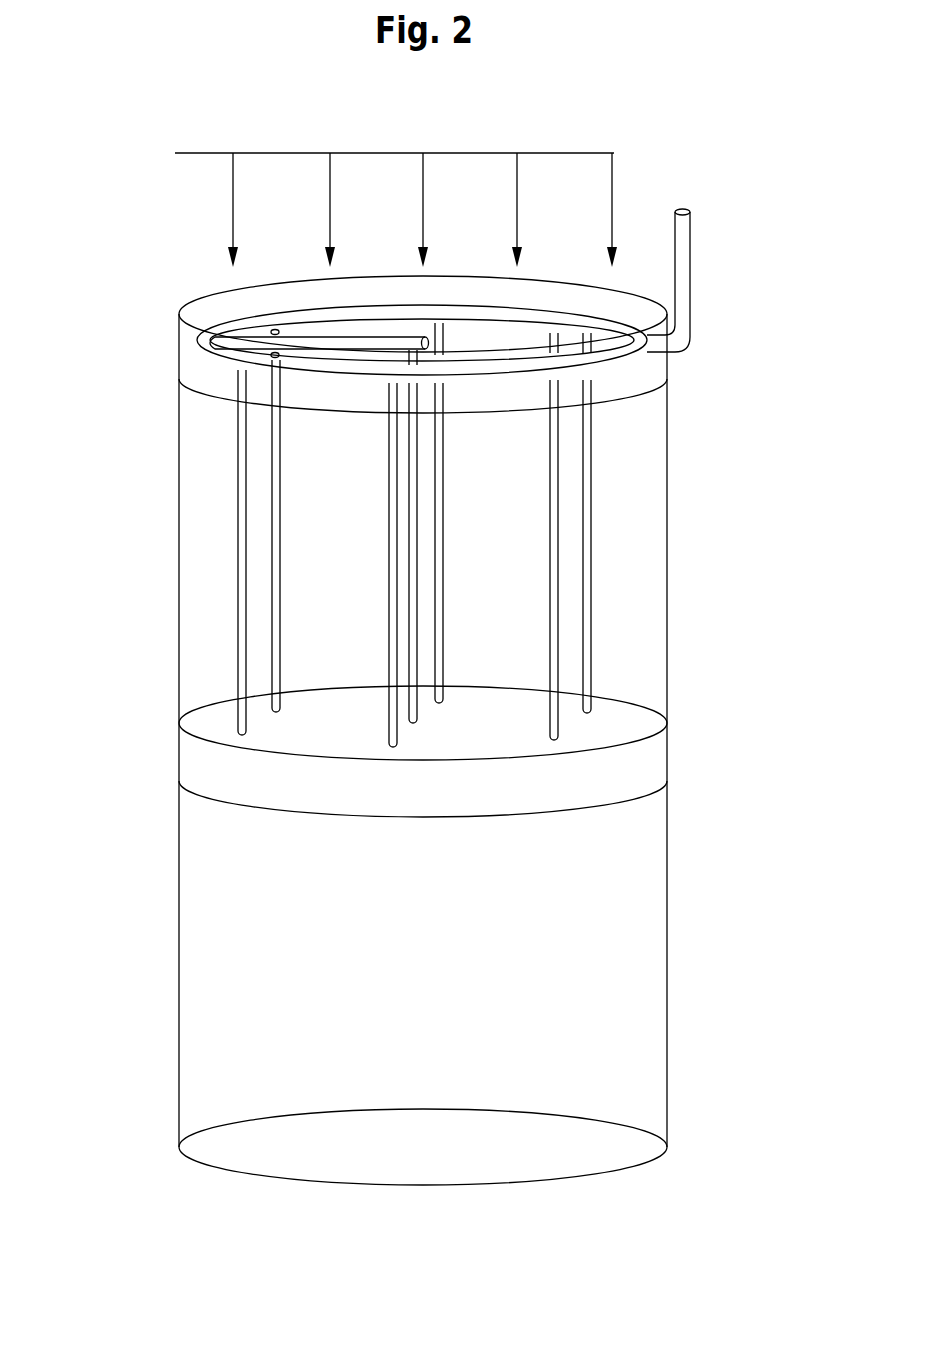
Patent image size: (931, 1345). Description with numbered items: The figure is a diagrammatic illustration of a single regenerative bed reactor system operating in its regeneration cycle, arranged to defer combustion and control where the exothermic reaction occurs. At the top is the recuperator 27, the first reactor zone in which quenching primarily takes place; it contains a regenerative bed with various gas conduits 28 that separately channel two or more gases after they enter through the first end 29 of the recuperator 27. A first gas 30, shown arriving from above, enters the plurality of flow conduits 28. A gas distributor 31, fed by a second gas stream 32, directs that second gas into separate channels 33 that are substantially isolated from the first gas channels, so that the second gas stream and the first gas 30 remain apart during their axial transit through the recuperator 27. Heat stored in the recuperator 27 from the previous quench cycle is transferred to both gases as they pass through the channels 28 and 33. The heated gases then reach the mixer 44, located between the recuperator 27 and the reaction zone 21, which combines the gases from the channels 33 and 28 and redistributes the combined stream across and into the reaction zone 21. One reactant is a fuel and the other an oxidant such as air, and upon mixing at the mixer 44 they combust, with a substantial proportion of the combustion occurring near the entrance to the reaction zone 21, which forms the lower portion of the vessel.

The reaction zone 21 is at (699, 763).
The recuperator 27 is at (699, 375).
The gas conduits 28 is at (627, 476).
The first end 29 is at (180, 381).
The first gas 30 is at (207, 153).
The gas distributor 31 is at (704, 326).
The second gas stream 32 is at (681, 194).
The second gas stream channels 33 is at (555, 565).
The mixer 44 is at (699, 697).